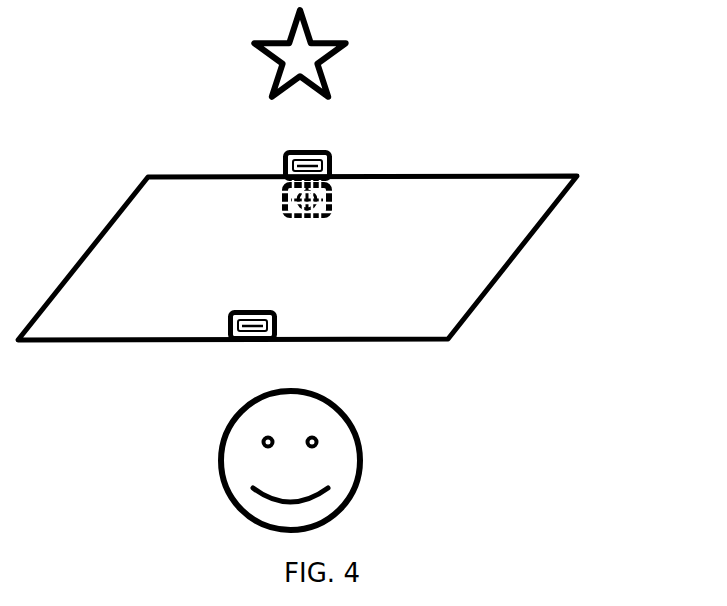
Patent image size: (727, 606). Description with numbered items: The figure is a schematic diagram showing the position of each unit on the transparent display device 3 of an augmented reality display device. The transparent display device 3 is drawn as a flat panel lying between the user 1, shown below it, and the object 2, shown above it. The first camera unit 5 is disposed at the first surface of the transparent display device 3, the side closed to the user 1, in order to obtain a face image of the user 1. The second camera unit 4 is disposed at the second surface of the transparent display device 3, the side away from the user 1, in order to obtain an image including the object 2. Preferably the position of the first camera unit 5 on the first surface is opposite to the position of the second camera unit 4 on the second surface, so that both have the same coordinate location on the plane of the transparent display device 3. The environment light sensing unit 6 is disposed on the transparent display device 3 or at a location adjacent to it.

The user 1 is at (365, 467).
The object 2 is at (332, 68).
The transparent display device 3 is at (513, 262).
The second camera unit 4 is at (330, 152).
The first camera unit 5 is at (333, 212).
The environment light sensing unit 6 is at (275, 312).